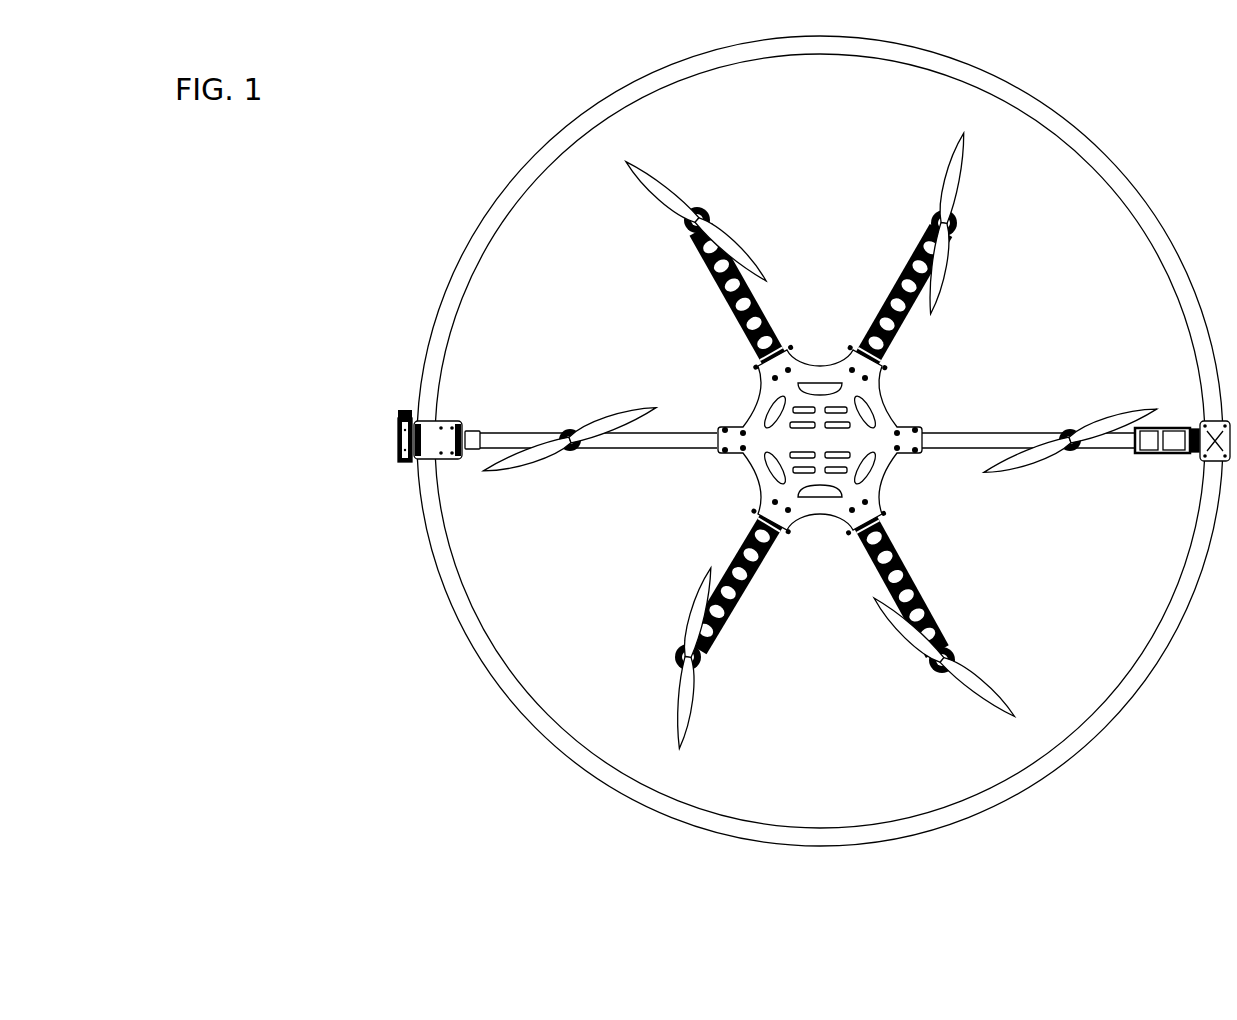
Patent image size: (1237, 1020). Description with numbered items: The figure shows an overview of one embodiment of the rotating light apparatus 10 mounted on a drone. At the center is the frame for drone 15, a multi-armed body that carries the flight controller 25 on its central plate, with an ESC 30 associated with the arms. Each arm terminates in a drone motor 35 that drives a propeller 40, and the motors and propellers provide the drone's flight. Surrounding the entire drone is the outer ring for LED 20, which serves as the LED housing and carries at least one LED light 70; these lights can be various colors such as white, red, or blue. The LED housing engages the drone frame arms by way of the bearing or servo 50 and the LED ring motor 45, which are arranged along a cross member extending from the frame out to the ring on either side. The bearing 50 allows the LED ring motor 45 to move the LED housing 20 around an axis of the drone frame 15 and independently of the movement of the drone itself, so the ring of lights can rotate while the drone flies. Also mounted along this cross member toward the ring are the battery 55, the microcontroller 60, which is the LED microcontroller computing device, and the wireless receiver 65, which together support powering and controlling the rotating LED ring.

The apparatus 10 is at (582, 127).
The frame for drone 15 is at (787, 357).
The outer ring for LED 20 is at (1090, 730).
The flight controller 25 is at (746, 451).
The ESC 30 is at (703, 296).
The drone motor 35 is at (946, 628).
The propeller 40 is at (690, 707).
The LED ring motor 45 is at (1173, 443).
The bearing or servo 50 is at (470, 443).
The battery 55 is at (402, 447).
The microcontroller 60 is at (400, 434).
The wireless receiver 65 is at (397, 412).
The LED light 70 is at (805, 45).